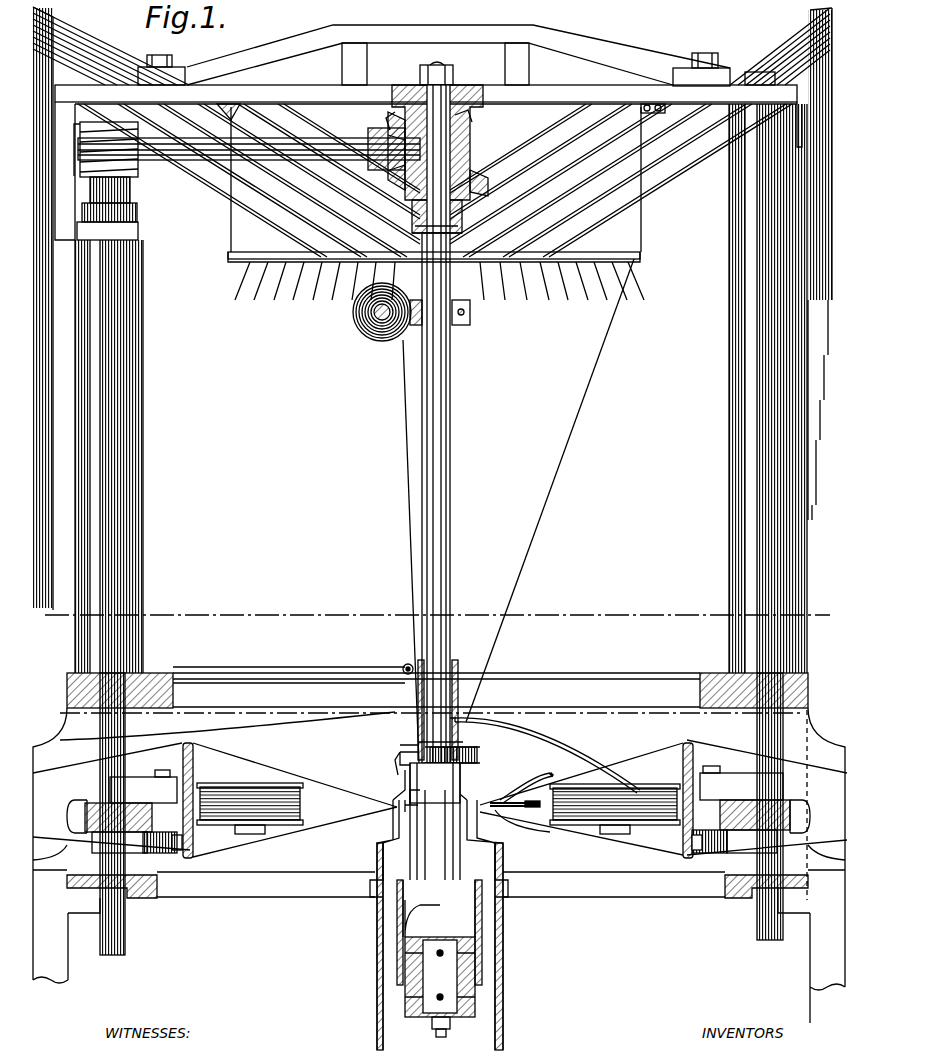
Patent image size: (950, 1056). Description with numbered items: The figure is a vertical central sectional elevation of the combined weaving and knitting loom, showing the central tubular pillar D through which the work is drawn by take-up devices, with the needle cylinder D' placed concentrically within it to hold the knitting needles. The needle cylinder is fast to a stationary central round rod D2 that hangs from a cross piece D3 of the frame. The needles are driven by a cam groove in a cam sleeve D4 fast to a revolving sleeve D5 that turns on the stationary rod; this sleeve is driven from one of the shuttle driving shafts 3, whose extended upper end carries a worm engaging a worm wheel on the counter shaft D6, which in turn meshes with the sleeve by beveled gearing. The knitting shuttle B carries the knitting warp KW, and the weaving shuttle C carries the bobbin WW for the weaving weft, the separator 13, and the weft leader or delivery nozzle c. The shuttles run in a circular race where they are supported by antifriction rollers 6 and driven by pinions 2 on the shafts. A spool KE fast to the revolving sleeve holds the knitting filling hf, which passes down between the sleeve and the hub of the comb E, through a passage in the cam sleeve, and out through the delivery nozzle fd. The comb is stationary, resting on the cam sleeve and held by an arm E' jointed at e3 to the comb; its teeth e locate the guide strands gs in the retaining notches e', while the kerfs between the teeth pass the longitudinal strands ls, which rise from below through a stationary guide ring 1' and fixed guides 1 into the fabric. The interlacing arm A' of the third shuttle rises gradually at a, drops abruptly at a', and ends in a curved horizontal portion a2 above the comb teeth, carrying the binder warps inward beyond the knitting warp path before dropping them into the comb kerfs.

The frame standard / roof strut bundle 1 is at (432, 308).
The shaft bracket 1' is at (481, 302).
The pinion 2 is at (80, 812).
The shuttle driving shaft 3 is at (755, 928).
The antifriction roller 6 is at (196, 800).
The separator 13 is at (537, 812).
The knitting shuttle B is at (180, 757).
The weaving shuttle C is at (686, 741).
The central tubular pillar D is at (409, 958).
The needle cylinder D' is at (436, 910).
The central stationary rod D2 is at (462, 213).
The cross piece D3 is at (497, 96).
The cam sleeve D4 is at (470, 770).
The revolving sleeve D5 is at (451, 424).
The counter shaft D6 is at (255, 132).
The comb E is at (315, 710).
The arm E' is at (434, 680).
The comb teeth e is at (375, 763).
The guide and retaining notch e' is at (381, 734).
The joint e3 is at (404, 664).
The spool KE is at (362, 340).
The knitting warp KW is at (298, 805).
The bobbin WW is at (655, 781).
The rising portion of interlacing arm a is at (547, 755).
The abrupt drop of interlacing arm a' is at (478, 715).
The horizontal portion of interlacing arm a2 is at (428, 747).
The interlacing arm A' is at (562, 782).
The weft leader or delivery nozzle c is at (511, 795).
The delivery nozzle fd is at (410, 790).
The guide strands gs is at (300, 735).
The hoisting cord hf is at (410, 486).
The longitudinal strands ls is at (204, 231).